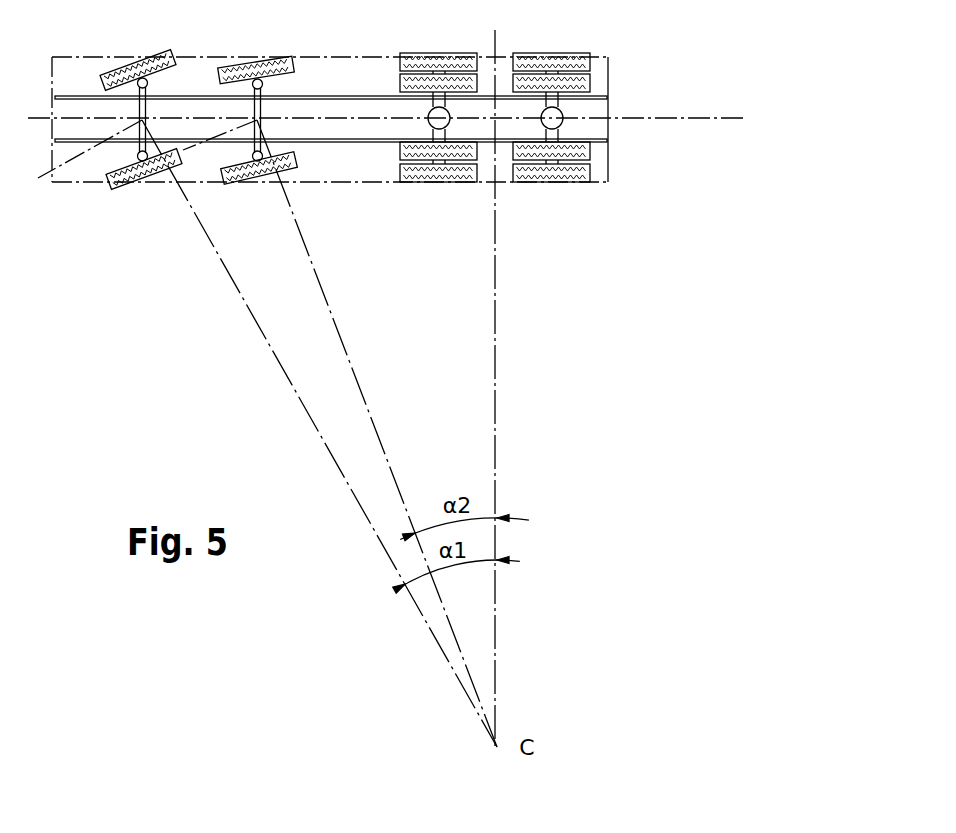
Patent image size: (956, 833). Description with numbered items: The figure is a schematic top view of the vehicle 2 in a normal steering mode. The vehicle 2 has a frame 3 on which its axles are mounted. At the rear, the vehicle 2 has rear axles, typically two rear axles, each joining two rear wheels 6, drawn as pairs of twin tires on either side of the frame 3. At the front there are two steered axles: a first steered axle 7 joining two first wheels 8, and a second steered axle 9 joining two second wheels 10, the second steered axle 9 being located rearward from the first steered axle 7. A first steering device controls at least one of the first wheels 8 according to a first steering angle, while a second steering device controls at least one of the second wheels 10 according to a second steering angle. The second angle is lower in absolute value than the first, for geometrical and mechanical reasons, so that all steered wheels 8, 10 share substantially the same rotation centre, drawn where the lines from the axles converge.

The vehicle 2 is at (636, 89).
The frame 3 is at (322, 96).
The rear wheels 6 is at (420, 53).
The first steered axle 7 is at (138, 147).
The first wheels 8 is at (142, 62).
The second steered axle 9 is at (250, 145).
The second wheels 10 is at (265, 67).